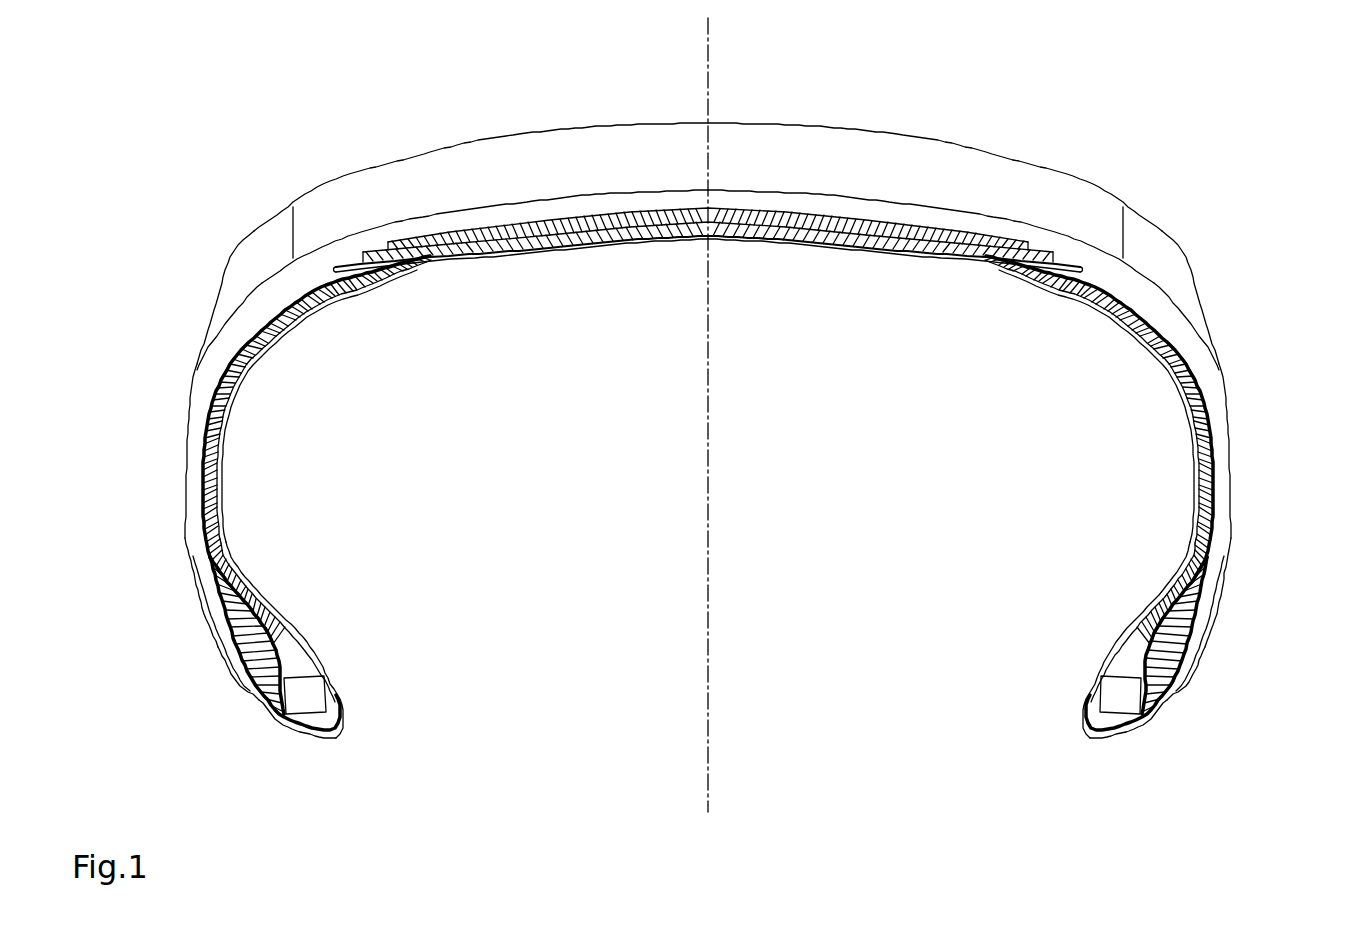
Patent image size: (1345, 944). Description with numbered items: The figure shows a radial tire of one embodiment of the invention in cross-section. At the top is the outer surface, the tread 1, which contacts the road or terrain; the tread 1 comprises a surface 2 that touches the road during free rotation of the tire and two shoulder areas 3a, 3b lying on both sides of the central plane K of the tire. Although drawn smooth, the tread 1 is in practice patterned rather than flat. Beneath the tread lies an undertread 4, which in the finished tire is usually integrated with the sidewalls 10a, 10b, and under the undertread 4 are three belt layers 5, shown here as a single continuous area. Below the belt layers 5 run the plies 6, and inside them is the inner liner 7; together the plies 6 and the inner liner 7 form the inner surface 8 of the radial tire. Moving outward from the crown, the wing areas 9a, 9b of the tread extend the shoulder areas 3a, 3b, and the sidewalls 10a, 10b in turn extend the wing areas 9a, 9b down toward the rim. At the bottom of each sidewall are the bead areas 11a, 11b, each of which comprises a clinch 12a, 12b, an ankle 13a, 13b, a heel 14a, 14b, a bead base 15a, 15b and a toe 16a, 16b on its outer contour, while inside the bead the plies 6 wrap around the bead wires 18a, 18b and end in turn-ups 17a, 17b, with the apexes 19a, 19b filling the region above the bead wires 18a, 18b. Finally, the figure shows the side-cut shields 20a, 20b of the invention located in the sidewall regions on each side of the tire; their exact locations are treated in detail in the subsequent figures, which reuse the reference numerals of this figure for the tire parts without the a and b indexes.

The tread 1 is at (549, 126).
The surface 2 is at (897, 168).
The shoulder area 3a is at (347, 197).
The shoulder area 3b is at (1085, 205).
The undertread 4 is at (806, 200).
The belt layers 5 is at (882, 252).
The plies 6 is at (782, 238).
The inner liner 7 is at (575, 247).
The inner surface 8 is at (660, 239).
The wing area 9a is at (243, 282).
The wing area 9b is at (1150, 258).
The sidewall 10a is at (193, 455).
The sidewall 10b is at (1230, 455).
The bead area 11a is at (187, 596).
The bead area 11b is at (1230, 619).
The clinch 12a is at (210, 632).
The clinch 12b is at (1205, 645).
The ankle 13a is at (252, 698).
The ankle 13b is at (1172, 695).
The heel 14a is at (277, 724).
The heel 14b is at (1147, 722).
The bead base 15a is at (318, 738).
The bead base 15b is at (1112, 738).
The toe 16a is at (340, 740).
The toe 16b is at (1085, 735).
The turn-up 17a is at (250, 676).
The turn-up 17b is at (1222, 603).
The bead wire 18a is at (308, 695).
The bead wire 18b is at (1115, 695).
The apex 19a is at (268, 652).
The apex 19b is at (1150, 648).
The side-cut shield 20a is at (202, 520).
The side-cut shield 20b is at (1205, 413).
The central plane K is at (711, 97).